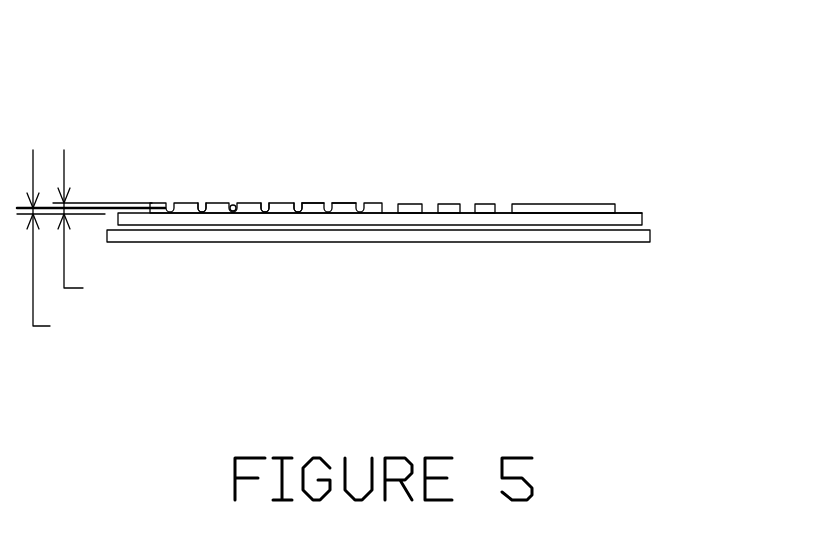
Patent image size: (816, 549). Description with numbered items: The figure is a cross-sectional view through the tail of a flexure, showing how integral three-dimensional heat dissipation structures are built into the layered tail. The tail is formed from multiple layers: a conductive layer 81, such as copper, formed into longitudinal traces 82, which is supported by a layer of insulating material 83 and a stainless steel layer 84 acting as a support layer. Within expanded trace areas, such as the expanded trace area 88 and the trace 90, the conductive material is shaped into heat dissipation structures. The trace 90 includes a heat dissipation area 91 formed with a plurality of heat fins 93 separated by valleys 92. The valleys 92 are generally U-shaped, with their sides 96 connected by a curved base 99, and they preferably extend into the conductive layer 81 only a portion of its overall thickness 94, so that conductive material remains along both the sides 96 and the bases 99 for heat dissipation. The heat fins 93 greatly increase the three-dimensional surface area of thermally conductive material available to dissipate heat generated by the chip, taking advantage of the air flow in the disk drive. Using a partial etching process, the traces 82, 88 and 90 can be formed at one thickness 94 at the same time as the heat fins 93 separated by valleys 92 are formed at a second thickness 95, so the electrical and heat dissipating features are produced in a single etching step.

The conductive layer 81 is at (617, 211).
The longitudinal traces 82 is at (449, 204).
The layer of insulating material 83 is at (640, 222).
The stainless steel layer 84 is at (648, 235).
The expanded trace area 88 is at (600, 204).
The trace 90 is at (412, 204).
The heat dissipation area 91 is at (150, 204).
The valleys 92 is at (298, 203).
The heat fins 93 is at (312, 203).
The overall thickness 94 is at (102, 228).
The second thickness 95 is at (91, 246).
The sides 96 is at (233, 205).
The base 99 is at (202, 207).